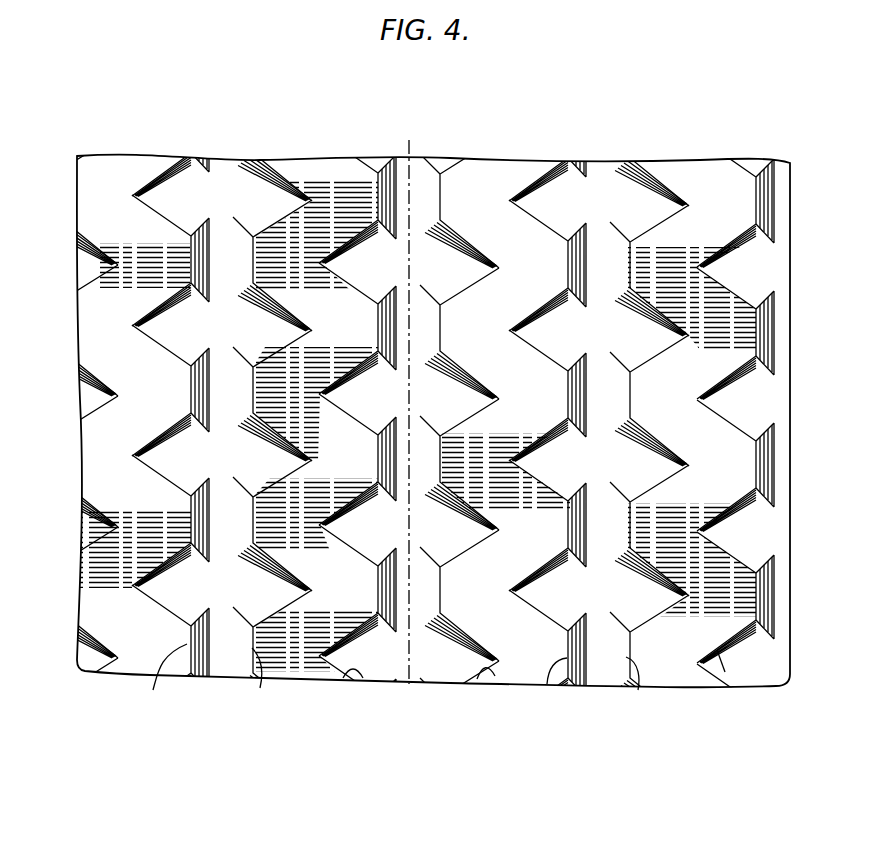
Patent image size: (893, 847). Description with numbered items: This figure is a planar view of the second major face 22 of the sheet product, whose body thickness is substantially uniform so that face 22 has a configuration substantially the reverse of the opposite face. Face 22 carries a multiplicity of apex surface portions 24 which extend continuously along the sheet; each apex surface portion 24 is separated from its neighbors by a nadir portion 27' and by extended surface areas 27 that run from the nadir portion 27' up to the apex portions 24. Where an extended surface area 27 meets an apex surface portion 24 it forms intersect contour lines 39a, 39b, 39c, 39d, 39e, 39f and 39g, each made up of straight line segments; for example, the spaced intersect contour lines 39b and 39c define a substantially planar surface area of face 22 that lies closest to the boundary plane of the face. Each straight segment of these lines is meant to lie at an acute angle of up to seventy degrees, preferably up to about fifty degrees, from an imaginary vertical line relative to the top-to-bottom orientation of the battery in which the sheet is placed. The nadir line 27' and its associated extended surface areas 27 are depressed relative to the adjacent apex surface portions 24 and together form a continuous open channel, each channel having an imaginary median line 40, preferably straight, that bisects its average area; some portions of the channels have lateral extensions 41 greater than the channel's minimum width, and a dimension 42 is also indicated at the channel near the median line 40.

The face 22 is at (73, 157).
The apex surface portion 24 is at (292, 652).
The extended surface area 27 is at (438, 432).
The nadir portion 27' is at (415, 145).
The intersect contour line 39a is at (155, 678).
The intersect contour line 39b is at (261, 681).
The intersect contour line 39c is at (361, 680).
The intersect contour line 39d is at (486, 672).
The intersect contour line 39e is at (548, 672).
The intersect contour line 39f is at (638, 690).
The intersect contour line 39g is at (722, 665).
The median line 40 is at (420, 149).
The lateral extension 41 is at (496, 523).
The offset dimension 42 is at (412, 590).